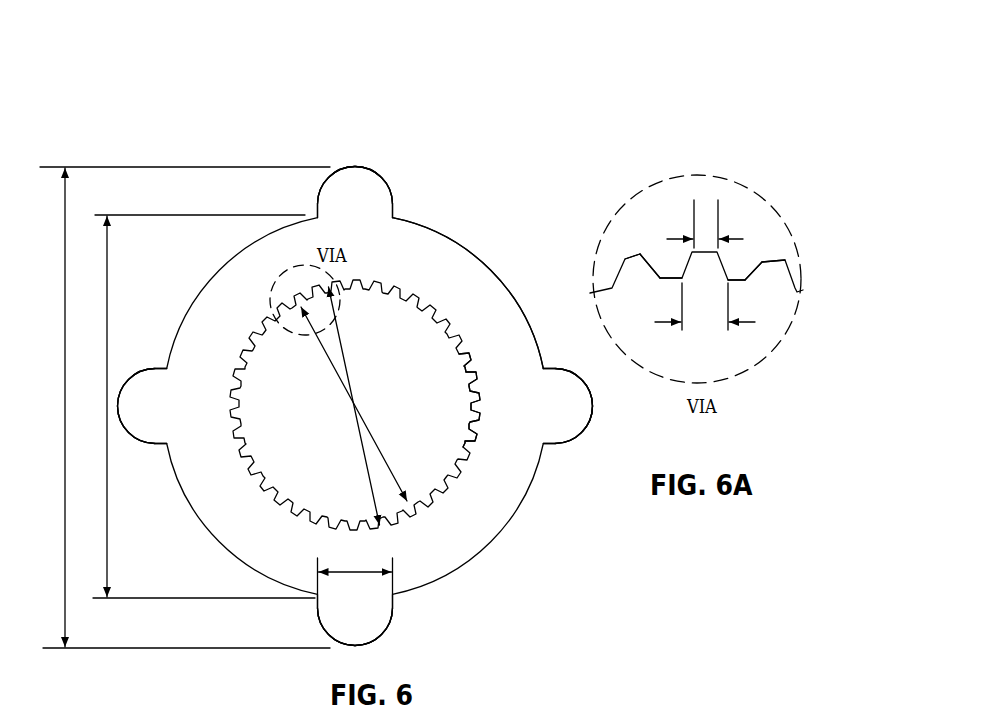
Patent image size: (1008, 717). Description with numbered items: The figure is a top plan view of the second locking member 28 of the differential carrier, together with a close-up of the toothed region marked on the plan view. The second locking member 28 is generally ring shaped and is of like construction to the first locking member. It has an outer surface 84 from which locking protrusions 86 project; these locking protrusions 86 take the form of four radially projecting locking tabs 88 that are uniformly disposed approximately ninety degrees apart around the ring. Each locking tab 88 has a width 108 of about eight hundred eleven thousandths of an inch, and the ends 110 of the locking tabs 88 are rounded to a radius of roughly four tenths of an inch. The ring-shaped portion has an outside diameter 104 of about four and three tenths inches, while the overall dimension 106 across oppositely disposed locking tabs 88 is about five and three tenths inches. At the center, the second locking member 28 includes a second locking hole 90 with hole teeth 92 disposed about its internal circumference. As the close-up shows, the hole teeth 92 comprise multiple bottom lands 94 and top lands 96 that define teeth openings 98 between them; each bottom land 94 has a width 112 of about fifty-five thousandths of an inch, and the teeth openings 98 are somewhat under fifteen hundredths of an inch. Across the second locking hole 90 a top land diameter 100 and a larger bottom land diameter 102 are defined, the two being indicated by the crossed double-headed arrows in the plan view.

In FIG. 6, the second locking member 28 is at (492, 549).
In FIG. 6A, the second locking member 28 is at (645, 212).
In FIG. 6, the outer surface 84 is at (440, 228).
In FIG. 6, the locking protrusions 86 is at (395, 190).
In FIG. 6, the locking tabs 88 is at (363, 183).
In FIG. 6, the second locking hole 90 is at (398, 377).
In FIG. 6, the hole teeth 92 is at (473, 437).
In FIG. 6A, the hole teeth 92 is at (665, 260).
In FIG. 6A, the bottom lands 94 is at (633, 253).
In FIG. 6A, the top lands 96 is at (670, 283).
In FIG. 6A, the teeth openings 98 is at (703, 317).
In FIG. 6, the top land diameter 100 is at (337, 378).
In FIG. 6, the bottom land diameter 102 is at (347, 358).
In FIG. 6, the outside diameter 104 is at (107, 556).
In FIG. 6, the overall dimension 106 is at (70, 602).
In FIG. 6, the width 108 is at (357, 570).
In FIG. 6, the ends 110 is at (353, 167).
In FIG. 6A, the width 112 is at (707, 213).